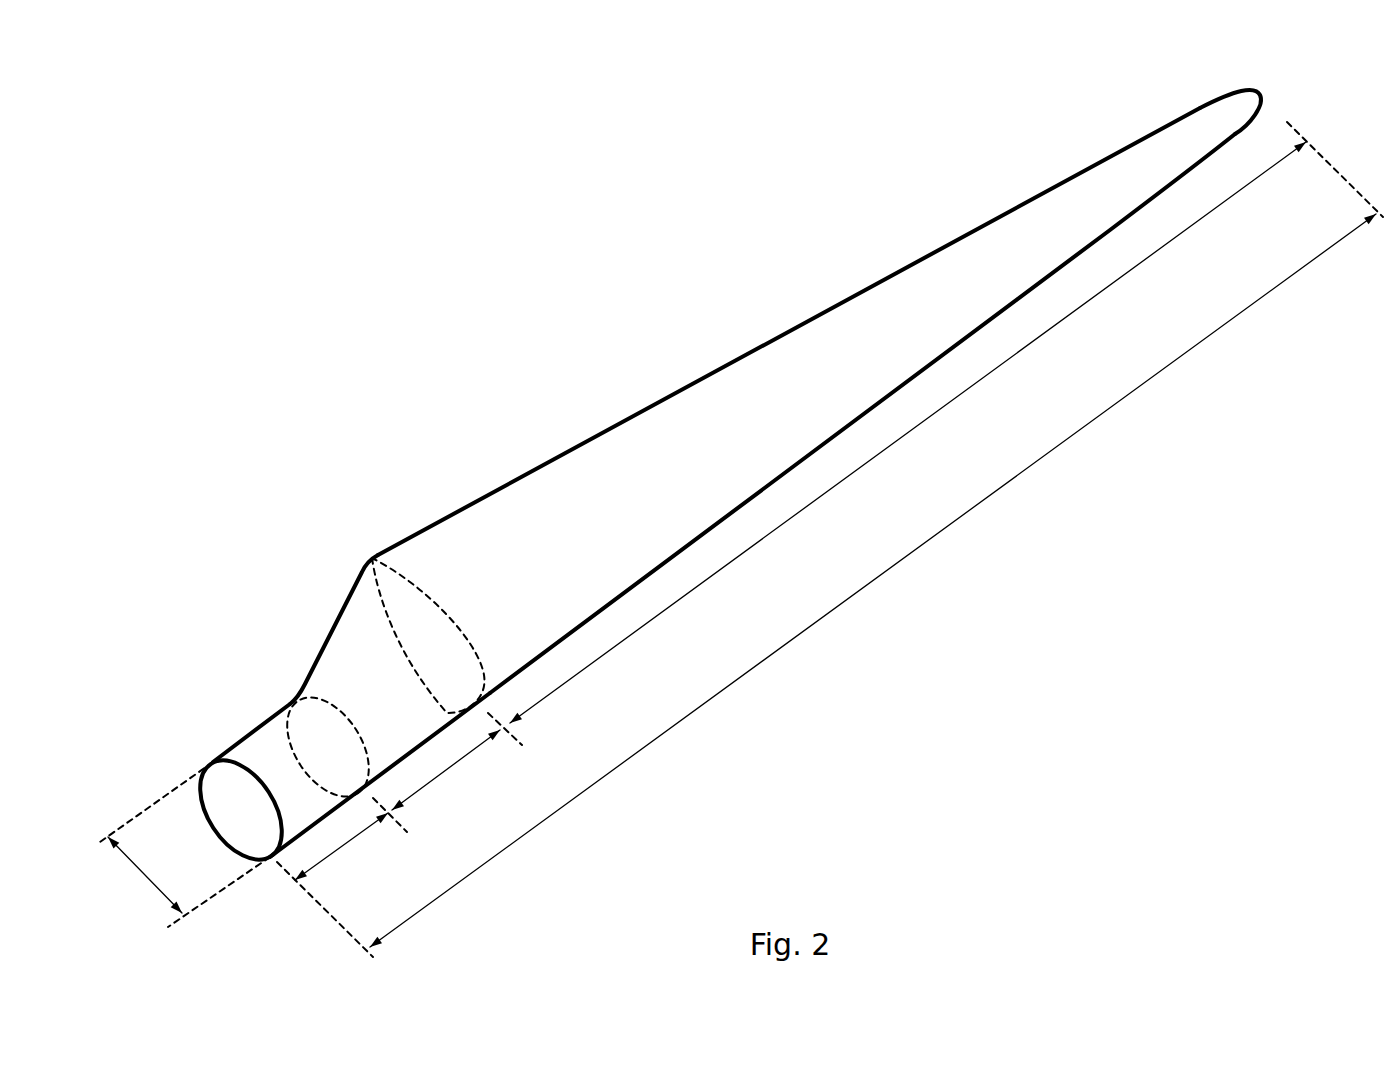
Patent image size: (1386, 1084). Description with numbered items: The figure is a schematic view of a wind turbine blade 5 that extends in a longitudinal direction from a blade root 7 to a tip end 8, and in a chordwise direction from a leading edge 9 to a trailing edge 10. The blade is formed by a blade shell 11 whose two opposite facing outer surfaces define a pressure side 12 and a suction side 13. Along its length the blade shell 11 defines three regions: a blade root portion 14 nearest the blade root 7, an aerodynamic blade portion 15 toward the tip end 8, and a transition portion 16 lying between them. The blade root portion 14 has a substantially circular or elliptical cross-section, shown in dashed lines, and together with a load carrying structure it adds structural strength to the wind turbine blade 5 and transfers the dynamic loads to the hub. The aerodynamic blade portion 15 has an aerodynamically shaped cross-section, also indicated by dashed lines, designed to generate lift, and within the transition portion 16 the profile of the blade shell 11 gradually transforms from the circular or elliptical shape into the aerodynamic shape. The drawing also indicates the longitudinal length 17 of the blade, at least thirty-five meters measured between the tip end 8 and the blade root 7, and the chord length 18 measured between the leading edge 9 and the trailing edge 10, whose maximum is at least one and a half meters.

The wind turbine blade 5 is at (530, 336).
The blade root 7 is at (236, 826).
The tip end 8 is at (1255, 88).
The leading edge 9 is at (940, 358).
The trailing edge 10 is at (948, 243).
The blade shell 11 is at (712, 393).
The pressure side 12 is at (387, 612).
The suction side 13 is at (819, 365).
The blade root portion 14 is at (343, 843).
The aerodynamic blade portion 15 is at (822, 495).
The transition portion 16 is at (448, 770).
The longitudinal length 17 is at (785, 647).
The chord length 18 is at (152, 888).